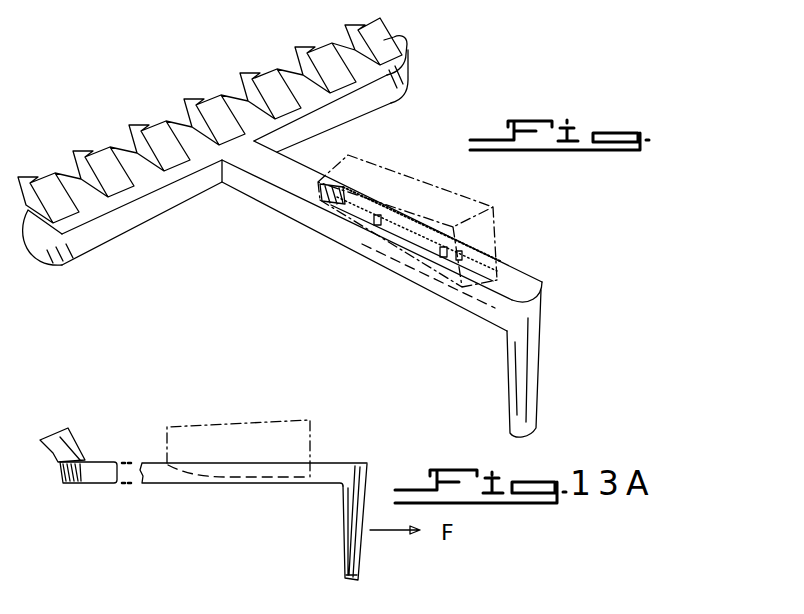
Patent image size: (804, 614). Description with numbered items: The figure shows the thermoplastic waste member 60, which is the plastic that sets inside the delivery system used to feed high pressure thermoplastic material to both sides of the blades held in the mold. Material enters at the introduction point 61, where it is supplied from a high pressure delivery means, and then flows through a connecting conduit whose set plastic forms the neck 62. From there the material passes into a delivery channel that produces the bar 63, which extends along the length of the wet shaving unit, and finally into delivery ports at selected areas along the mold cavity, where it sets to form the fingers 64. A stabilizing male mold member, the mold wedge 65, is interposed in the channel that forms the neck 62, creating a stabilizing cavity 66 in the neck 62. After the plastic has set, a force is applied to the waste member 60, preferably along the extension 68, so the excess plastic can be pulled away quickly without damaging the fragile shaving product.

In FIG. 13, the thermoplastic waste member 60 is at (277, 297).
In FIG. 13A, the introduction point 61 is at (346, 580).
In FIG. 13, the neck 62 is at (370, 255).
In FIG. 13A, the neck 62 is at (290, 487).
In FIG. 13, the bar 63 is at (147, 224).
In FIG. 13A, the bar 63 is at (104, 478).
In FIG. 13, the fingers 64 is at (80, 178).
In FIG. 13A, the fingers 64 is at (75, 438).
In FIG. 13, the mold wedge 65 is at (400, 172).
In FIG. 13A, the mold wedge 65 is at (294, 420).
In FIG. 13, the stabilizing cavity 66 is at (467, 258).
In FIG. 13A, the extension 68 is at (342, 532).